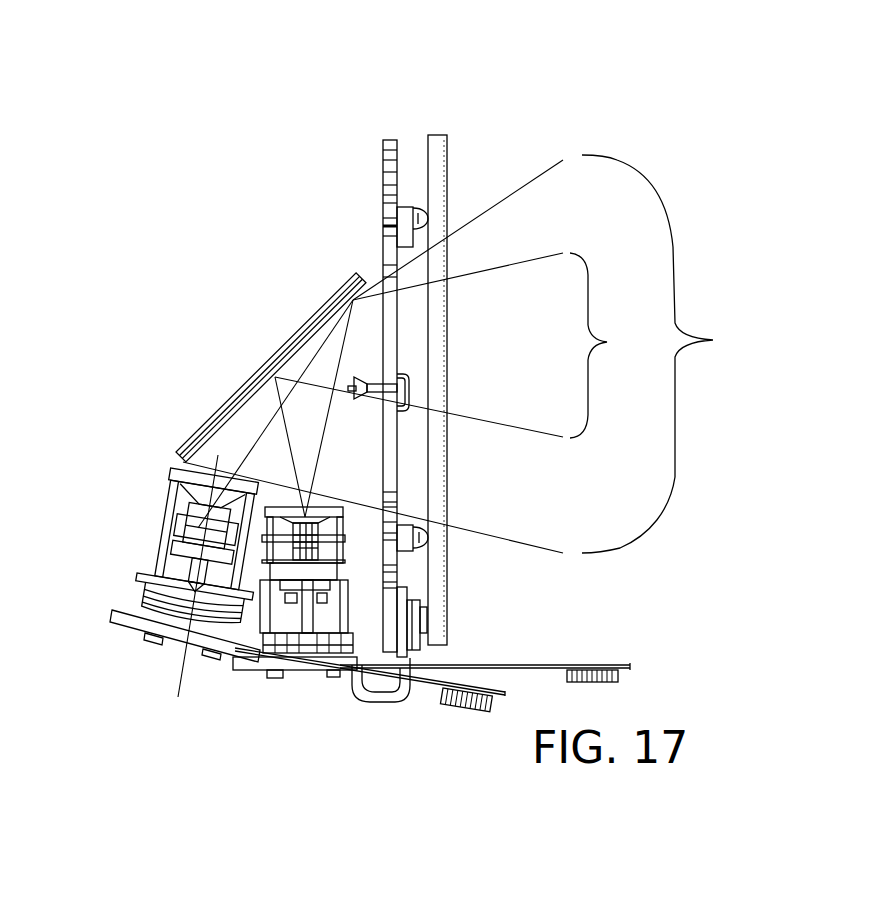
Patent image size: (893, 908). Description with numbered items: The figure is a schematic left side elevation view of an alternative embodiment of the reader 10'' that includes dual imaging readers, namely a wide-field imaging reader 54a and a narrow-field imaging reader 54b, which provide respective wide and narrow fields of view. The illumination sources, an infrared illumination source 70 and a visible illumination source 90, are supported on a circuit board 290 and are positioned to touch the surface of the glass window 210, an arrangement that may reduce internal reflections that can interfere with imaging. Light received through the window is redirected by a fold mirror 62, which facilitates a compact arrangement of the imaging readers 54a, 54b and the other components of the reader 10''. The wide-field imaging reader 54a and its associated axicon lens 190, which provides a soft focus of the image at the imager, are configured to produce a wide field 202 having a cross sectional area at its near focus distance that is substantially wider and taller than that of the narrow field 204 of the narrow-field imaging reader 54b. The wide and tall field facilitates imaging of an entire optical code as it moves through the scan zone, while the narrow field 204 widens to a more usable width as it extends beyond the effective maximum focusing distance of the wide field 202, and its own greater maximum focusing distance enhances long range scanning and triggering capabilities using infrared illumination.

The reader 10'' is at (432, 415).
The circuit board 290 is at (397, 140).
The glass window 210 is at (440, 135).
The infrared illumination source 70 is at (430, 215).
The visible illumination source 90 is at (403, 240).
The fold mirror 62 is at (307, 322).
The narrow field 204 is at (628, 345).
The wide field 202 is at (693, 354).
The axicon lens 190 is at (172, 530).
The wide-field imaging reader 54a is at (134, 662).
The narrow-field imaging reader 54b is at (275, 698).